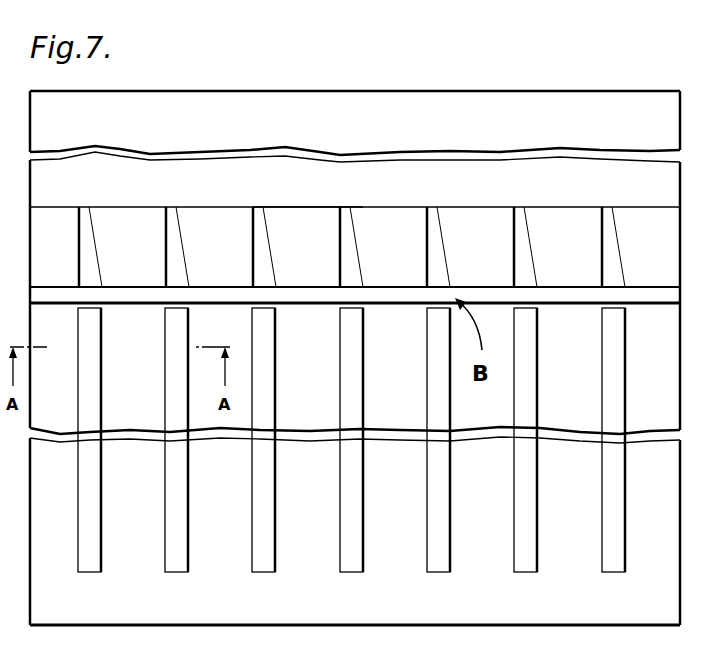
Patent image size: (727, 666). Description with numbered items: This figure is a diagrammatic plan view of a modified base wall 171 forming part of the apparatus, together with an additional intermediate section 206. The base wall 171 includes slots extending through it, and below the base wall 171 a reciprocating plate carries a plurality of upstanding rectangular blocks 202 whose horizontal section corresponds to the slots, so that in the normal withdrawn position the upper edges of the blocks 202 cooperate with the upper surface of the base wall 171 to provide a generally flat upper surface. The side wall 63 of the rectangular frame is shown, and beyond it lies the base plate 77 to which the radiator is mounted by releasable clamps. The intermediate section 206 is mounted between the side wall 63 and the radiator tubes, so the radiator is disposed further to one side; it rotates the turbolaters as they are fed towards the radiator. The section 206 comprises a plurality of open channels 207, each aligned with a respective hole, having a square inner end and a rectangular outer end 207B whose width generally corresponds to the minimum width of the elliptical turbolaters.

The base plate 77 is at (563, 112).
The intermediate section 206 is at (222, 225).
The channels 207 is at (440, 232).
The outer end 207B is at (342, 207).
The side wall 63 is at (565, 293).
The upstanding rectangular blocks 202 is at (529, 560).
The base wall 171 is at (236, 602).